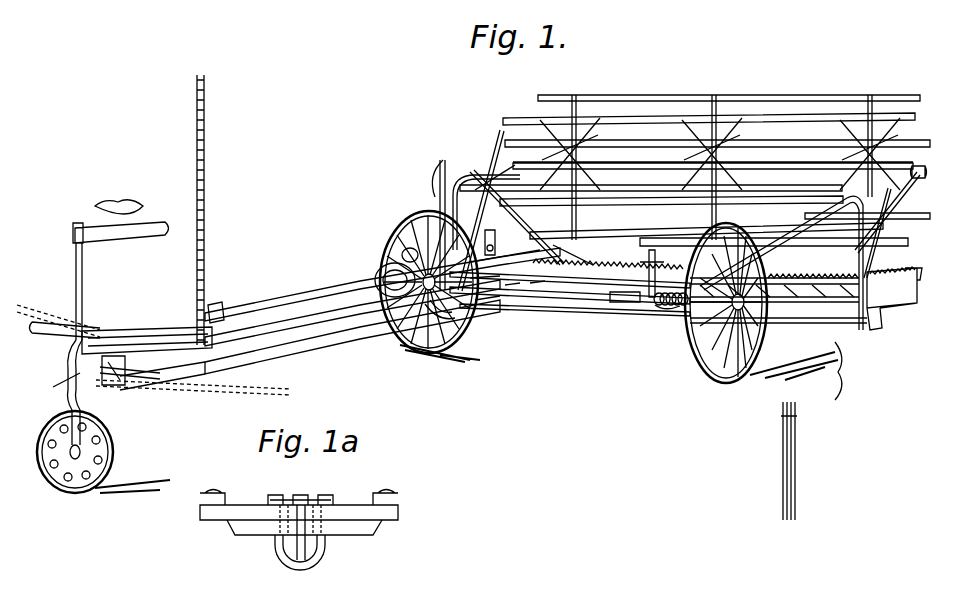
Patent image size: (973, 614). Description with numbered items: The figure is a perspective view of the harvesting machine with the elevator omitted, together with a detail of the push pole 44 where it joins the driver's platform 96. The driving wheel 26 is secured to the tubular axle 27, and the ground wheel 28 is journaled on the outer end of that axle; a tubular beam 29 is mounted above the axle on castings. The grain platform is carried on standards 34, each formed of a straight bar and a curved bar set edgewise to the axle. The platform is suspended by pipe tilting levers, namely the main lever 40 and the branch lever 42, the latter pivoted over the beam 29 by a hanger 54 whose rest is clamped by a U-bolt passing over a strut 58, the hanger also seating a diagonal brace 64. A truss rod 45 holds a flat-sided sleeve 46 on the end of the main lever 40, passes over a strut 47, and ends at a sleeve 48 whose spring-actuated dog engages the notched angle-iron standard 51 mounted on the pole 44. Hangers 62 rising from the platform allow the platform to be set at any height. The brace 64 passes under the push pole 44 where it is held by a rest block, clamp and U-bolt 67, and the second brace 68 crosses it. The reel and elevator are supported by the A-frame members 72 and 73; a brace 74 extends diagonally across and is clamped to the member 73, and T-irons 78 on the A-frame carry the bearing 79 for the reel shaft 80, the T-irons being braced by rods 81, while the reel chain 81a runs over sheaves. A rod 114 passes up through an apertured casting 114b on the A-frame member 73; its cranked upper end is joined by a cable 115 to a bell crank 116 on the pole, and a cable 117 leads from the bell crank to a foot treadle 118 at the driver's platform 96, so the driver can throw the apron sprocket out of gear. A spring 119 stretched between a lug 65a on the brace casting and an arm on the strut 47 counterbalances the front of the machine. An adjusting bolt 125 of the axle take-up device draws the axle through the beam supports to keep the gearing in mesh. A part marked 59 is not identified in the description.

In FIG. 1, the driving wheel 26 is at (440, 318).
In FIG. 1, the axle 27 is at (660, 306).
In FIG. 1, the ground wheel 28 is at (760, 345).
In FIG. 1, the tubular beam 29 is at (628, 300).
In FIG. 1, the standards 34 is at (450, 330).
In FIG. 1, the main lever 40 is at (296, 312).
In FIG. 1, the branch lever 42 is at (615, 262).
In FIG. 1, the push pole 44 is at (338, 325).
In FIG. 1A, the push pole 44 is at (328, 545).
In FIG. 1, the truss rod 45 is at (297, 292).
In FIG. 1, the sleeve 46 is at (553, 245).
In FIG. 1, the strut 47 is at (515, 256).
In FIG. 1, the sleeve 48 is at (216, 305).
In FIG. 1, the angle iron standard 51 is at (204, 243).
In FIG. 1, the hanger 54 is at (622, 304).
In FIG. 1, the strut 58 is at (656, 256).
In FIG. 1, the rod 59 is at (593, 270).
In FIG. 1, the hangers 62 is at (495, 246).
In FIG. 1, the diagonal brace bar 64 is at (540, 290).
In FIG. 1, the lug 65a is at (508, 300).
In FIG. 1, the U bolt 67 is at (512, 293).
In FIG. 1, the second brace 68 is at (392, 340).
In FIG. 1, the A-frame member 72 is at (858, 226).
In FIG. 1, the A-frame member 73 is at (510, 217).
In FIG. 1, the brace 74 is at (496, 160).
In FIG. 1, the T-irons 78 is at (900, 190).
In FIG. 1, the bearing 79 is at (518, 150).
In FIG. 1, the reel shaft 80 is at (910, 163).
In FIG. 1, the rods 81 is at (872, 232).
In FIG. 1, the reel chain 81a is at (452, 207).
In FIG. 1, the driver's platform 96 is at (143, 330).
In FIG. 1A, the driver's platform 96 is at (345, 508).
In FIG. 1, the rod 114 is at (468, 158).
In FIG. 1, the apertured casting 114b is at (443, 168).
In FIG. 1, the cable 115 is at (492, 240).
In FIG. 1, the bell crank 116 is at (510, 290).
In FIG. 1, the cable 117 is at (282, 342).
In FIG. 1, the foot treadle 118 is at (125, 377).
In FIG. 1, the spring 119 is at (404, 251).
In FIG. 1, the adjusting bolt 125 is at (672, 312).